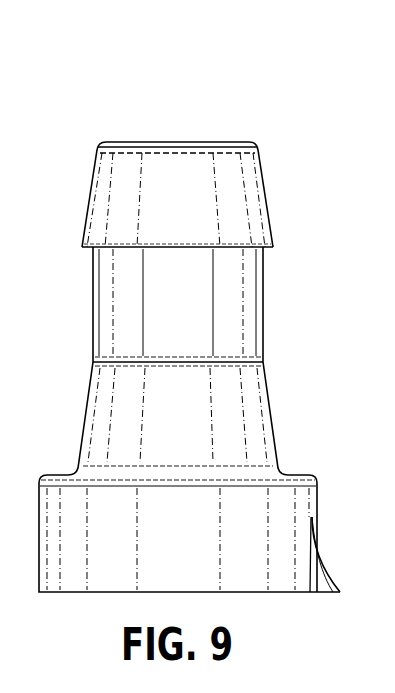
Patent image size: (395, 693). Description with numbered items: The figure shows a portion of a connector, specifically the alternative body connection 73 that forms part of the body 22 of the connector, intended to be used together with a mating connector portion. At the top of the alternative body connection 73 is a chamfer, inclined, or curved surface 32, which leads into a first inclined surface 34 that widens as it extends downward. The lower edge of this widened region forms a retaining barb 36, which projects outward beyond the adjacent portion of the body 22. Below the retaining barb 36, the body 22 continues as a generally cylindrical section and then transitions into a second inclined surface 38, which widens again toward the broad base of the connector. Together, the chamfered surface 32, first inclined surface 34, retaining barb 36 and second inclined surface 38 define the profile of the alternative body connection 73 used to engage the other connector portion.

The alternative body connection 73 is at (176, 120).
The chamfer, inclined, or curved surface 32 is at (256, 142).
The first inclined surface 34 is at (270, 203).
The retaining barb 36 is at (272, 245).
The body 22 is at (264, 306).
The second inclined surface 38 is at (270, 394).